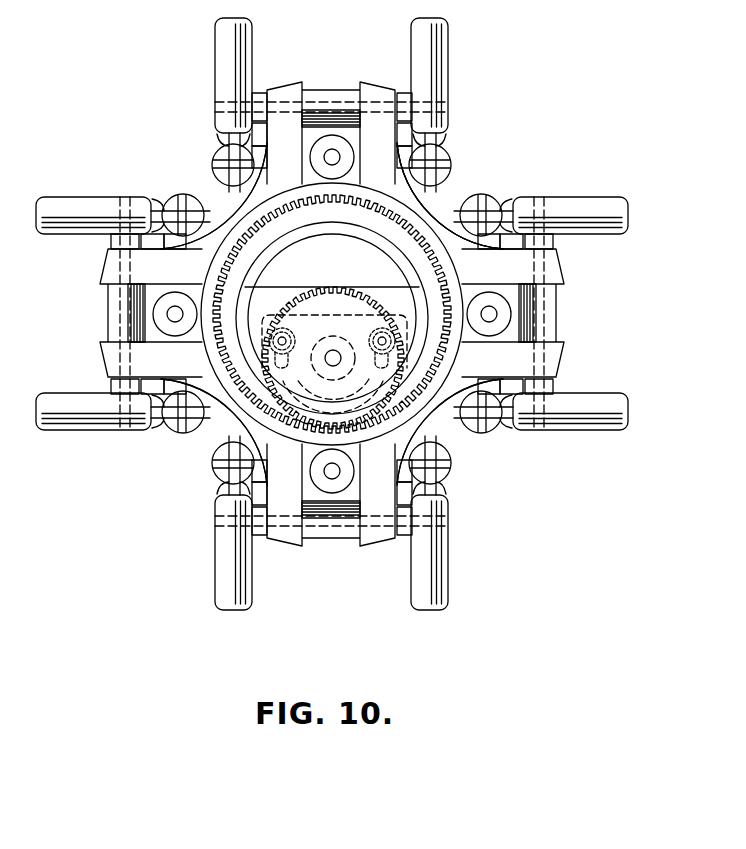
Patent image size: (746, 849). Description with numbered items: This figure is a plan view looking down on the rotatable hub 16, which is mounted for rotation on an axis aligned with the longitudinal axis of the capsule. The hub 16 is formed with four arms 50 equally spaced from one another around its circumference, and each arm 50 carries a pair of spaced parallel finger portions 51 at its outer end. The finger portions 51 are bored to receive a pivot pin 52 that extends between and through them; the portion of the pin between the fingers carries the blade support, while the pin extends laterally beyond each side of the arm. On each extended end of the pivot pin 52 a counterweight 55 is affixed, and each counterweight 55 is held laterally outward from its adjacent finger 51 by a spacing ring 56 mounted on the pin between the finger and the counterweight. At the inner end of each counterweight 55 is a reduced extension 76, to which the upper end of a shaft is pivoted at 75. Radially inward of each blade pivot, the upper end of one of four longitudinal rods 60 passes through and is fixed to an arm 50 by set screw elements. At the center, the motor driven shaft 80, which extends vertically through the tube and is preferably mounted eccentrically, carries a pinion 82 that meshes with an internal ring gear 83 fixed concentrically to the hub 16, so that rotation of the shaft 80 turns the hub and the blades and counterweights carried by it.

The rotatable hub 16 is at (438, 193).
The arms 50 is at (291, 87).
The finger portions 51 is at (374, 81).
The pivot pin 52 is at (217, 109).
The counterweight 55 is at (248, 56).
The spacing ring 56 is at (550, 246).
The longitudinal rods 60 is at (334, 157).
The pivot 75 is at (185, 205).
The reduced extension 76 is at (224, 141).
The motor driven shaft 80 is at (334, 355).
The pinion 82 is at (328, 300).
The internal ring gear 83 is at (216, 311).